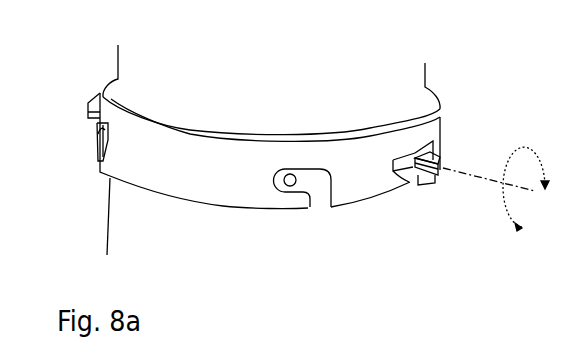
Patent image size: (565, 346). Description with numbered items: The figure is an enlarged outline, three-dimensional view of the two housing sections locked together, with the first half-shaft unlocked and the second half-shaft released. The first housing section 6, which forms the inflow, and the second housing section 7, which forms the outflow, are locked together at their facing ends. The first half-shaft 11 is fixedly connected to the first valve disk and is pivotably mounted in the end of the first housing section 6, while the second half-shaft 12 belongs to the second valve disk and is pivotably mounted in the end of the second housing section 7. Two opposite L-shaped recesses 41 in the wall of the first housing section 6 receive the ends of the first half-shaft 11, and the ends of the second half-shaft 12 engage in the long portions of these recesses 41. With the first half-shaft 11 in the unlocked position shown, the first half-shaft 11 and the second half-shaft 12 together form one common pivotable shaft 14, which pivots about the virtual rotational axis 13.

The first housing section 6 is at (160, 72).
The second housing section 7 is at (128, 235).
The first half-shaft 11 is at (432, 158).
The second half-shaft 12 is at (422, 176).
The virtual rotational axis 13 is at (477, 181).
The common shaft 14 is at (444, 152).
The L-shaped recess 41 is at (393, 171).